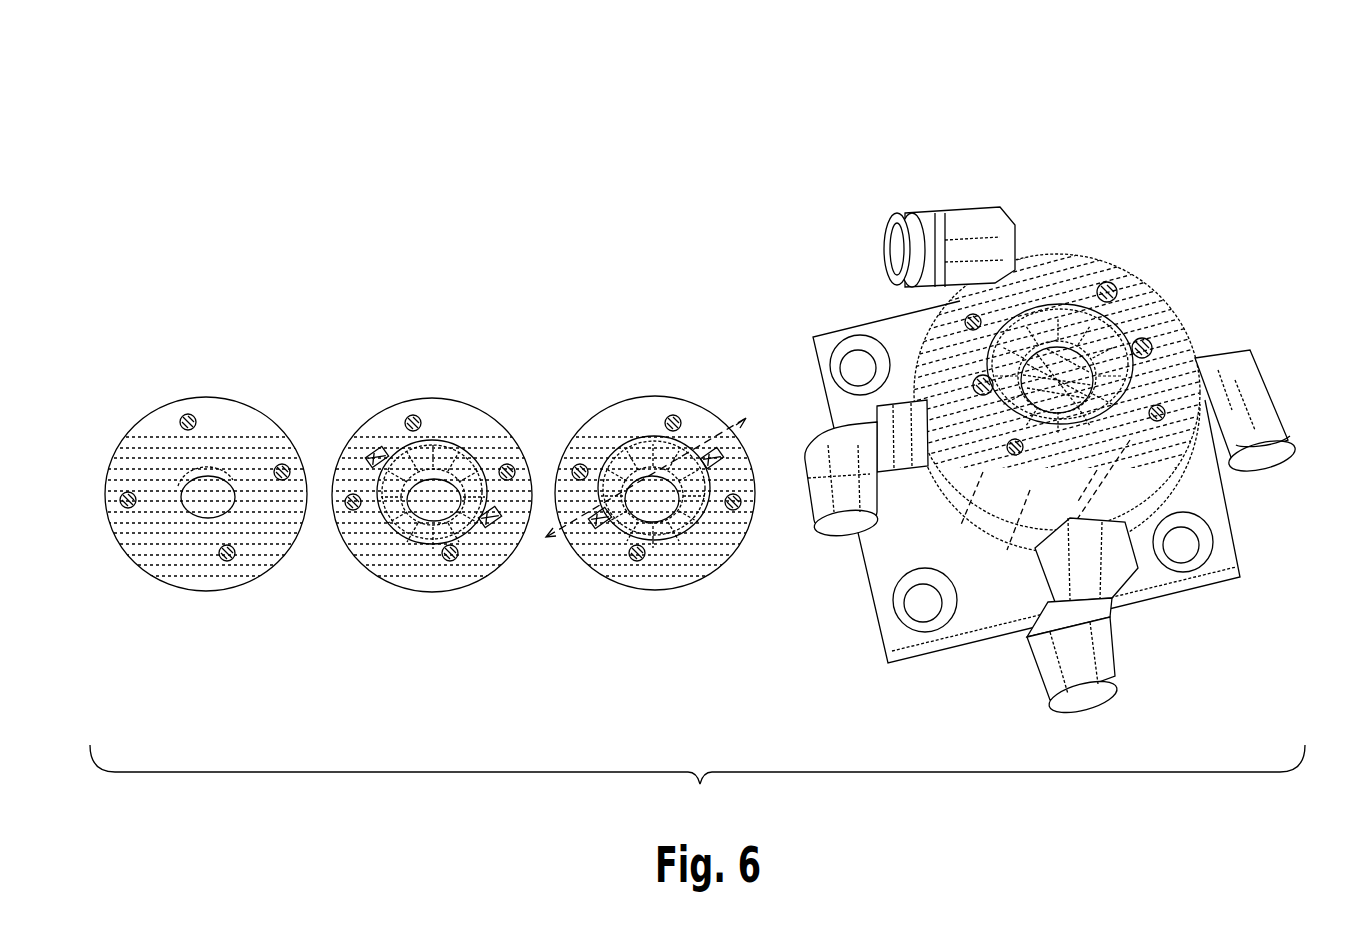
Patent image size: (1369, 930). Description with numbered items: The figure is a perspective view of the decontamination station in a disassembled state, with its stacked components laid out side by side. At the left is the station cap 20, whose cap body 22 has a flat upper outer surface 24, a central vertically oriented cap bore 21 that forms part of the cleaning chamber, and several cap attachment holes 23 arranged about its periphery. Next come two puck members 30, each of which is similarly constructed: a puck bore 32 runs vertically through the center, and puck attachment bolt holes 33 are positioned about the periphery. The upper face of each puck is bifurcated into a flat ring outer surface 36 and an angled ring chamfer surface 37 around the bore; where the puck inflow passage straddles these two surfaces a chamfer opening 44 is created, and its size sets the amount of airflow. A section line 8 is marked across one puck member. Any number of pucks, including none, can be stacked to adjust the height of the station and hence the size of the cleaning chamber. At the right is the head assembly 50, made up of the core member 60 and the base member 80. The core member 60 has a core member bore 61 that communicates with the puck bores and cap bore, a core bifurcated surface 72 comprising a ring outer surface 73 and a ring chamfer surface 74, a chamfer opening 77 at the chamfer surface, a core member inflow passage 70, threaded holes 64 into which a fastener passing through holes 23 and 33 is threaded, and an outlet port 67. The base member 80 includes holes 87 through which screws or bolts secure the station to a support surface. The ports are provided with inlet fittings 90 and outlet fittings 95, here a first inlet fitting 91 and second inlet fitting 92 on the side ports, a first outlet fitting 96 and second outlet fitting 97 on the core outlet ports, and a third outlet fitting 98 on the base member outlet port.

The section line 8- 8 is at (655, 493).
The station cap 20 is at (152, 390).
The cap bore 21 is at (206, 501).
The cap body 22 is at (684, 480).
The cap attachment holes 23 is at (189, 416).
The upper outer surface 24 is at (684, 480).
The puck member 30 is at (684, 479).
The puck bore 32 is at (417, 512).
The puck attachment bolt holes 33 is at (410, 416).
The ring outer surface 36 is at (380, 422).
The ring chamfer surface 37 is at (433, 452).
The chamfer opening 44 is at (377, 460).
The head assembly 50 is at (1038, 357).
The core member 60 is at (1140, 272).
The core member bore 61 is at (1052, 400).
The threaded bolt holes 64 is at (1120, 290).
The outlet port 67 is at (1090, 513).
The core member inflow passage 70 is at (975, 388).
The core bifurcated surface 72 is at (1060, 292).
The ring outer surface 73 is at (1036, 268).
The ring chamfer surface 74 is at (1110, 416).
The chamfer opening 77 is at (1010, 395).
The base member 80 is at (965, 423).
The holes 87 is at (833, 342).
The inlet fittings 90 is at (1283, 314).
The first inlet fitting 91 is at (1240, 378).
The second inlet fitting 92 is at (825, 497).
The outlet fittings 95 is at (1024, 397).
The first outlet fitting 96 is at (1042, 624).
The second outlet fitting 97 is at (947, 226).
The third outlet fitting 98 is at (1043, 663).